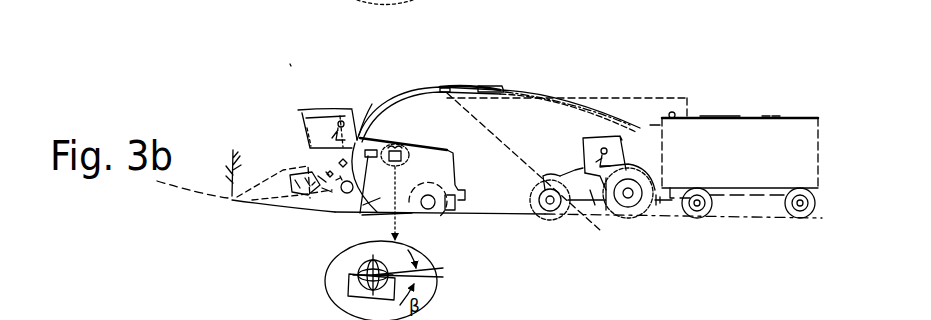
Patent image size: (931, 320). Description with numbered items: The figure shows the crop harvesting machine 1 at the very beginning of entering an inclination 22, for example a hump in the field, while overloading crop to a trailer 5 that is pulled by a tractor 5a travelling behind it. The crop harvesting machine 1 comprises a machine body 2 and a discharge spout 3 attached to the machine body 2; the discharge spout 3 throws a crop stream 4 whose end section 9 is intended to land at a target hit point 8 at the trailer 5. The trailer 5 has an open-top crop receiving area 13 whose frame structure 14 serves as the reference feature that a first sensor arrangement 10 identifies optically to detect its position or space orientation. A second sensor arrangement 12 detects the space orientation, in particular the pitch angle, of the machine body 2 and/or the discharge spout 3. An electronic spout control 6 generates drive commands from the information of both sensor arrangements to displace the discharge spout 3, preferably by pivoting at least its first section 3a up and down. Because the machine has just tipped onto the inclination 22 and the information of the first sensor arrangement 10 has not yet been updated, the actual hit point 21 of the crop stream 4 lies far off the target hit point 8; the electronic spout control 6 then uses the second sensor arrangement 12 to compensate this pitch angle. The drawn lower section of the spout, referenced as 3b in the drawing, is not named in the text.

The crop harvesting machine 1 is at (287, 63).
The machine body 2 is at (377, 198).
The discharge spout 3 is at (399, 89).
The first section of the discharge spout 3a is at (377, 107).
The spout end flap 3b is at (482, 86).
The crop stream 4 is at (520, 88).
The trailer 5 is at (727, 66).
The tractor 5a is at (590, 192).
The electronic spout control 6 is at (390, 167).
The target hit point 8 is at (681, 114).
The end section of the crop stream 9 is at (621, 107).
The first sensor arrangement 10 is at (448, 88).
The second sensor arrangement 12 is at (397, 167).
The crop receiving area 13 is at (764, 112).
The frame structure 14 is at (722, 117).
The actual hit point 21 is at (655, 127).
The inclination 22 is at (180, 186).